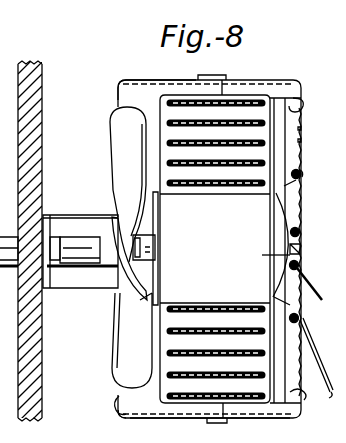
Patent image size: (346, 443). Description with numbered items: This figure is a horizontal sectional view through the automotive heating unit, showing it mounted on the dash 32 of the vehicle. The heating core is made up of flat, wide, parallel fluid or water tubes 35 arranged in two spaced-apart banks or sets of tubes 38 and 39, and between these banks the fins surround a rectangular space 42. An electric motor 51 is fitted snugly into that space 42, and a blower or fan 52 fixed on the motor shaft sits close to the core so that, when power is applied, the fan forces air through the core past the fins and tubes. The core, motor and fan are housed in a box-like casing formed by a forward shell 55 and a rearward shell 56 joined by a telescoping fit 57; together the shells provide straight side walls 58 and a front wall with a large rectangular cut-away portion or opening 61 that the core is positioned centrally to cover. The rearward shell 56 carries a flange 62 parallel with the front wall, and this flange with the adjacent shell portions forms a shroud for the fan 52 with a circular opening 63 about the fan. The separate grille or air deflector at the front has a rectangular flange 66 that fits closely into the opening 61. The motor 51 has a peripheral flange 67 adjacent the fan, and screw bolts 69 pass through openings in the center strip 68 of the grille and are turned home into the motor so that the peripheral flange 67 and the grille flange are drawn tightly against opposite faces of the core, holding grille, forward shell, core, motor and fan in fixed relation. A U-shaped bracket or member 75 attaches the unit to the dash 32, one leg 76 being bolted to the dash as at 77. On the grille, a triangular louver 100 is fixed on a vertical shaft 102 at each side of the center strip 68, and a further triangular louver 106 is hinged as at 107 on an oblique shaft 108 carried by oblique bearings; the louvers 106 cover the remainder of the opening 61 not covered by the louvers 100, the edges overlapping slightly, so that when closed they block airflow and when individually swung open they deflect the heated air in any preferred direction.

The dash 32 is at (43, 157).
The fluid or water tubes 35 is at (284, 160).
The bank or set of tubes 38 is at (263, 143).
The bank or set of tubes 39 is at (157, 404).
The rectangular space 42 is at (165, 310).
The electric motor 51 is at (162, 204).
The blower or fan 52 is at (120, 126).
The forward shell 55 is at (279, 79).
The rearward shell 56 is at (163, 78).
The telescoping fit 57 is at (218, 77).
The straight side walls 58 is at (139, 78).
The cut-away portion or opening 61 is at (280, 205).
The flange 62 is at (118, 408).
The circular opening 63 is at (118, 417).
The rectangular flange 66 is at (301, 106).
The peripheral flange 67 is at (160, 218).
The center strip 68 is at (290, 253).
The screw bolts 69 is at (300, 248).
The bracket or member 75 is at (100, 280).
The leg 76 is at (62, 238).
The bolted connection 77 is at (68, 237).
The triangular shaped louver 100 is at (300, 212).
The vertical shaft 102 is at (297, 230).
The triangular shaped louver 106 is at (301, 138).
The hinge 107 is at (285, 188).
The oblique shaft 108 is at (302, 175).